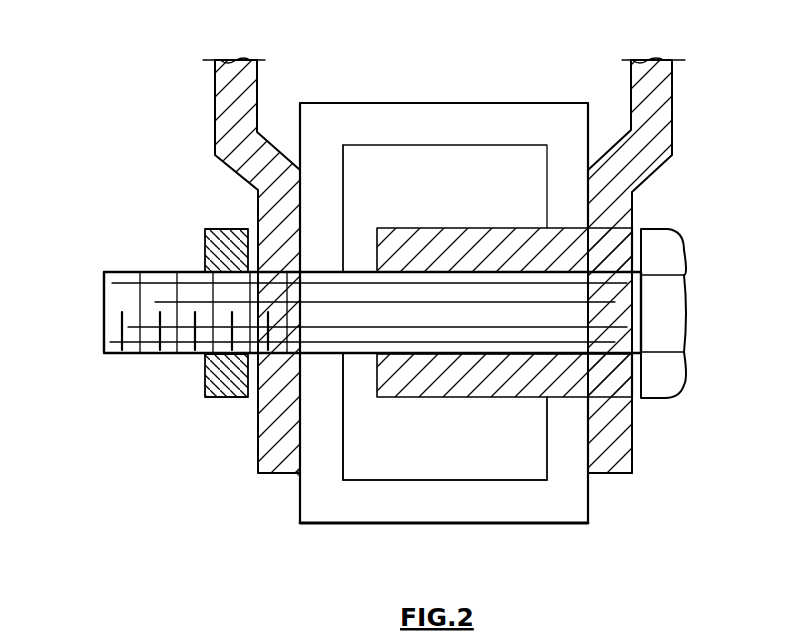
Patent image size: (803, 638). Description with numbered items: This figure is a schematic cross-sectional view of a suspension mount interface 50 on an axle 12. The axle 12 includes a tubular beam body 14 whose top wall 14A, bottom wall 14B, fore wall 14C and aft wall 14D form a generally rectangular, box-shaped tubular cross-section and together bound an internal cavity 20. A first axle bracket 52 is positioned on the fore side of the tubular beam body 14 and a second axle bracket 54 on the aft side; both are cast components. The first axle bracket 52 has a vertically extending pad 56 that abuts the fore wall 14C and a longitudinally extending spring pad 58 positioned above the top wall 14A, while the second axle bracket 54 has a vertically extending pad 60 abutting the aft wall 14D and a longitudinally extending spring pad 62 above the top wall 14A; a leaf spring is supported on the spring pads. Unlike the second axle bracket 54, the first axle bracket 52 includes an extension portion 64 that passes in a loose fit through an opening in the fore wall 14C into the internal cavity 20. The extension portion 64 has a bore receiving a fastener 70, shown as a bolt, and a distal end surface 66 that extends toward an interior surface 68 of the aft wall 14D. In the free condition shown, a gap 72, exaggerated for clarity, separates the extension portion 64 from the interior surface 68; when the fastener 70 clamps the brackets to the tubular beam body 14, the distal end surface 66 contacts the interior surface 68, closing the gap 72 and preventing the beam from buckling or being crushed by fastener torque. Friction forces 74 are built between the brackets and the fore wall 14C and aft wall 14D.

The axle 12 is at (598, 533).
The tubular beam body 14 is at (300, 521).
The top wall 14A is at (400, 117).
The bottom wall 14B is at (408, 514).
The fore wall 14C is at (560, 459).
The aft wall 14D is at (329, 465).
The internal cavity 20 is at (458, 465).
The suspension mount interface 50 is at (92, 46).
The first axle bracket 52 is at (645, 162).
The second axle bracket 54 is at (226, 123).
The vertically extending pad 56 is at (623, 440).
The longitudinally extending spring pad 58 is at (672, 61).
The vertically extending pad 60 is at (265, 413).
The longitudinally extending spring pad 62 is at (218, 62).
The extension portion 64 is at (491, 233).
The distal end surface 66 is at (376, 383).
The interior surface 68 is at (343, 205).
The fastener 70 is at (673, 306).
The gap 72 is at (361, 240).
The friction forces 74 is at (300, 170).